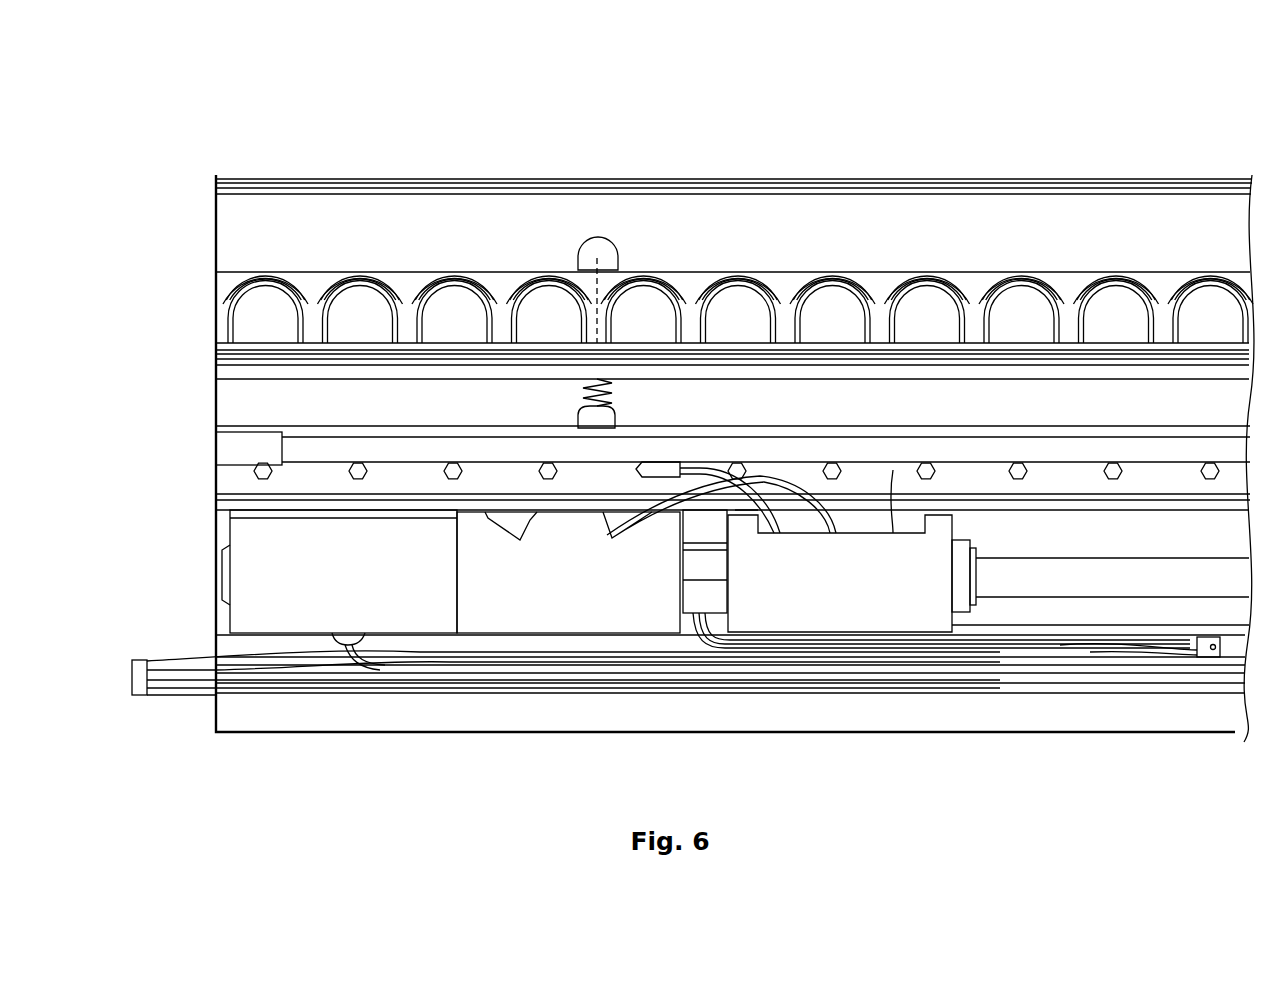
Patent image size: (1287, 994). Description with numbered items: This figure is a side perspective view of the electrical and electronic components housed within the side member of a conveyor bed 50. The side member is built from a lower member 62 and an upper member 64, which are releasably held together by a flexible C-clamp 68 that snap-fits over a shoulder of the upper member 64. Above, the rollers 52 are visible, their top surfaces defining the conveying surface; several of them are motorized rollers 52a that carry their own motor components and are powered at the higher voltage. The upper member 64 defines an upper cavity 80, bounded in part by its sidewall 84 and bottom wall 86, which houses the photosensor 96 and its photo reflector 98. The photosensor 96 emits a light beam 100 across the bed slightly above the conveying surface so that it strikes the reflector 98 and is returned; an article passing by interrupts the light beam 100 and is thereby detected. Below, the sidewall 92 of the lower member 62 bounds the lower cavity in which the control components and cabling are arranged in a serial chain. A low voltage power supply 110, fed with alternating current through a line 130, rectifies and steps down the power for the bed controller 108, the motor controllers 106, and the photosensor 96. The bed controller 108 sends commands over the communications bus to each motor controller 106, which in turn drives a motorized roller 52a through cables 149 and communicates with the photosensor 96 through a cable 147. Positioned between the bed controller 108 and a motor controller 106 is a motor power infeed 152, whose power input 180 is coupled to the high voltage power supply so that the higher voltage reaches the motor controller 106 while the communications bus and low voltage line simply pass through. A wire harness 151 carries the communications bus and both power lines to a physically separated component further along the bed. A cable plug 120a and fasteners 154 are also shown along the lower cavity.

The conveyor bed 50 is at (187, 140).
The upper member 64 is at (252, 218).
The rollers 52 is at (252, 327).
The motorized roller 52a is at (625, 275).
The photo reflector 98 is at (592, 250).
The light beam 100 is at (580, 275).
The upper cavity 80 is at (240, 402).
The sidewall of upper member 84 is at (352, 419).
The bottom wall of upper member 86 is at (425, 427).
The photosensor 96 is at (578, 410).
The C-clamp 68 is at (232, 455).
The fastener nuts 154 is at (1045, 482).
The cables 149 is at (783, 533).
The cable 147 is at (890, 470).
The low voltage power supply 110 is at (243, 563).
The bed controller 108 is at (547, 610).
The power input 180 is at (700, 640).
The motor controller 106 is at (885, 608).
The motor power infeed 152 is at (717, 578).
The sidewall of lower member 92 is at (1141, 549).
The wire harness 151 is at (1065, 590).
The lower member 62 is at (268, 708).
The line 130 is at (340, 643).
The cable plug 120a is at (132, 673).